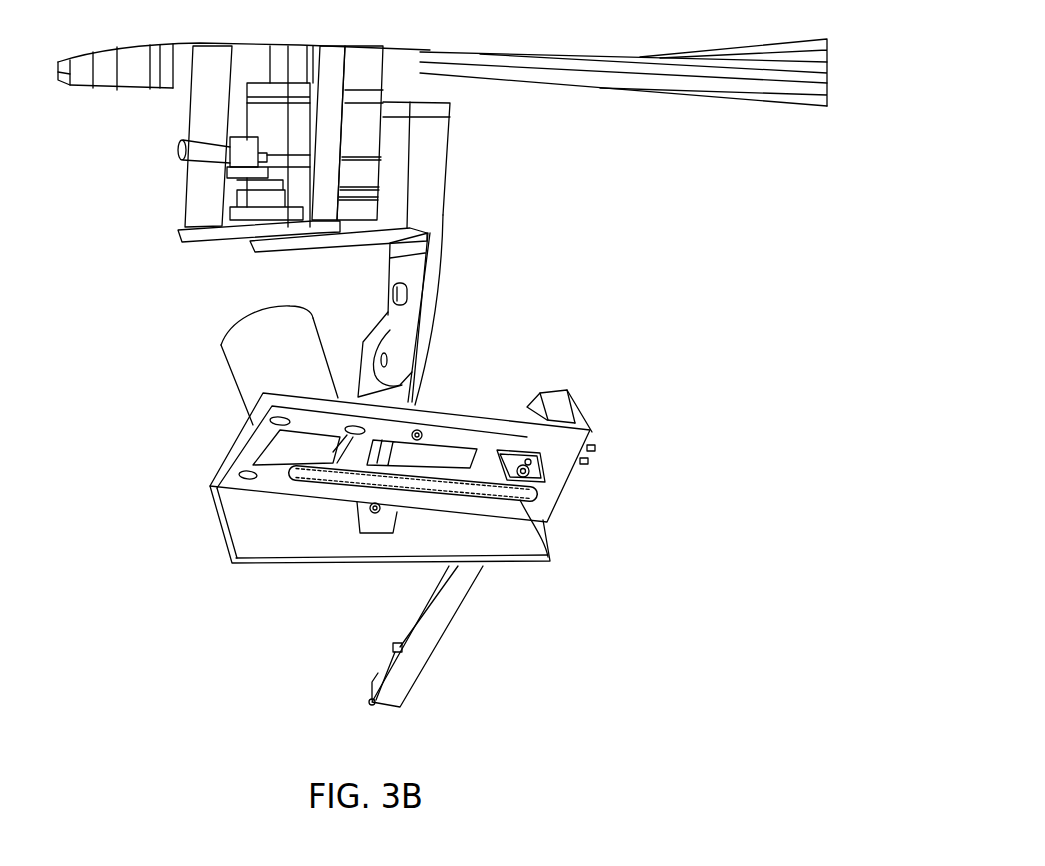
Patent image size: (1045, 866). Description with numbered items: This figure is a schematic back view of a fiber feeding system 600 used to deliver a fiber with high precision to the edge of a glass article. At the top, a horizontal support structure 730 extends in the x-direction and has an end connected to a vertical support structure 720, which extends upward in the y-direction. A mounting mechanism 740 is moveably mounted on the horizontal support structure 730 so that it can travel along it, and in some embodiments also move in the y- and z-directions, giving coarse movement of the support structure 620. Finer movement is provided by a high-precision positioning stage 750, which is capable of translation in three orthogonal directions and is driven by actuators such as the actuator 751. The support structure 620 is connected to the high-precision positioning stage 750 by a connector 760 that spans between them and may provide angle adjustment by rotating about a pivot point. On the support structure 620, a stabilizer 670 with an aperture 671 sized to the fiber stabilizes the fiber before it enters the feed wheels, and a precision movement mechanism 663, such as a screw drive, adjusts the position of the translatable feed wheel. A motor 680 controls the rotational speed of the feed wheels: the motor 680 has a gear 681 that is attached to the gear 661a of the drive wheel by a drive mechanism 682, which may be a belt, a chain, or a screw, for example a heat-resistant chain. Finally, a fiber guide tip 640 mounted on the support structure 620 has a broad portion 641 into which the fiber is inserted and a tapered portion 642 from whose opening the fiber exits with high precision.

The fiber feeding system 600 is at (133, 373).
The support structure 620 is at (560, 493).
The fiber guide tip 640 is at (378, 673).
The broad portion 641 is at (393, 647).
The tapered portion 642 is at (369, 704).
The gear 661a is at (546, 560).
The precision movement mechanism 663 is at (593, 447).
The stabilizer 670 is at (577, 420).
The aperture 671 is at (543, 410).
The motor 680 is at (227, 365).
The gear 681 is at (312, 470).
The drive mechanism 682 is at (357, 490).
The vertical support structure 720 is at (88, 76).
The horizontal support structure 730 is at (723, 92).
The mounting mechanism 740 is at (193, 108).
The high-precision positioning stage 750 is at (450, 152).
The actuator 751 is at (178, 152).
The connector 760 is at (433, 305).